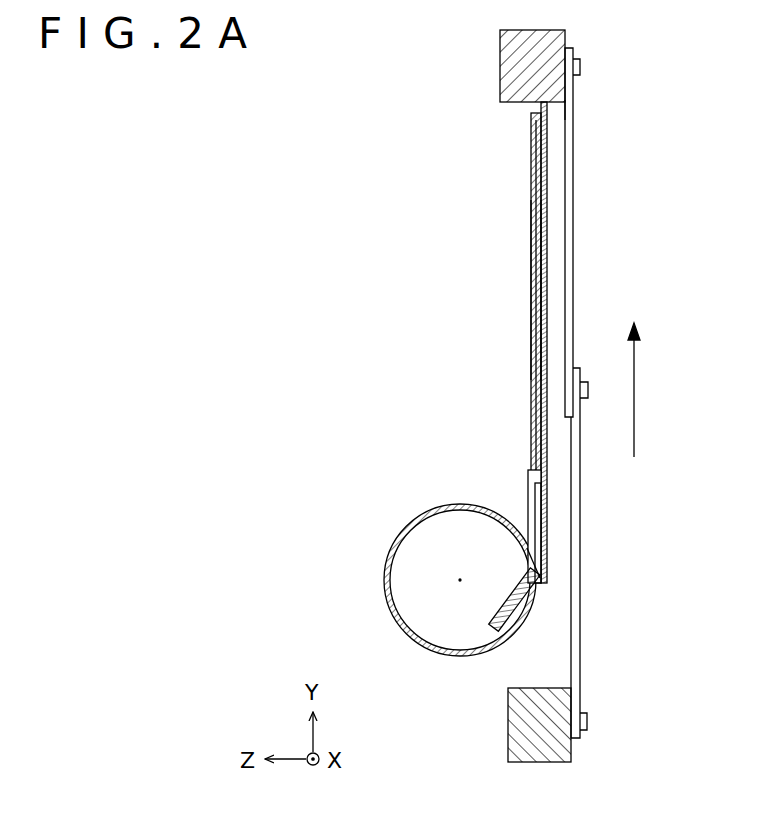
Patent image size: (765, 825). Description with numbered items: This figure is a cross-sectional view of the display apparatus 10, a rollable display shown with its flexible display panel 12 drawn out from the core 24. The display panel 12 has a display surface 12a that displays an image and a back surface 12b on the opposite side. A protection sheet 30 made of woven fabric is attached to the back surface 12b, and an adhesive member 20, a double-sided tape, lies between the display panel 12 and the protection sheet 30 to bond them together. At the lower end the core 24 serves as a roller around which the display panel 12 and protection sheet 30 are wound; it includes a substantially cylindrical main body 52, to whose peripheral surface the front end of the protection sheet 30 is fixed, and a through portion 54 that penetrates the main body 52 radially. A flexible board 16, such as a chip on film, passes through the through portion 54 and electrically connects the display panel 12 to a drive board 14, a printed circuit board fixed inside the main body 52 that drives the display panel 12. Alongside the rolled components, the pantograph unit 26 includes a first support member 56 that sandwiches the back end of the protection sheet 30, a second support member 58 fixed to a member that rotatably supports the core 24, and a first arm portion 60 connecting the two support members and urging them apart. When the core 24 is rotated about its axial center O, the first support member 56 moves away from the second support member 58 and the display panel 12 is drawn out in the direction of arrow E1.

The display apparatus 10 is at (346, 72).
The display panel 12 is at (531, 271).
The display surface 12a is at (529, 288).
The back surface 12b is at (545, 290).
The drive board 14 is at (521, 630).
The flexible board 16 is at (528, 506).
The adhesive member 20 is at (531, 347).
The core 24 is at (386, 574).
The pantograph unit 26 is at (592, 126).
The protection sheet 30 is at (548, 175).
The main body 52 is at (392, 612).
The through portion 54 is at (520, 555).
The first support member 56 is at (516, 70).
The second support member 58 is at (520, 722).
The first arm portion 60 is at (580, 590).
The axial center O is at (462, 583).
The arrow indicating draw-out direction E1 is at (636, 392).